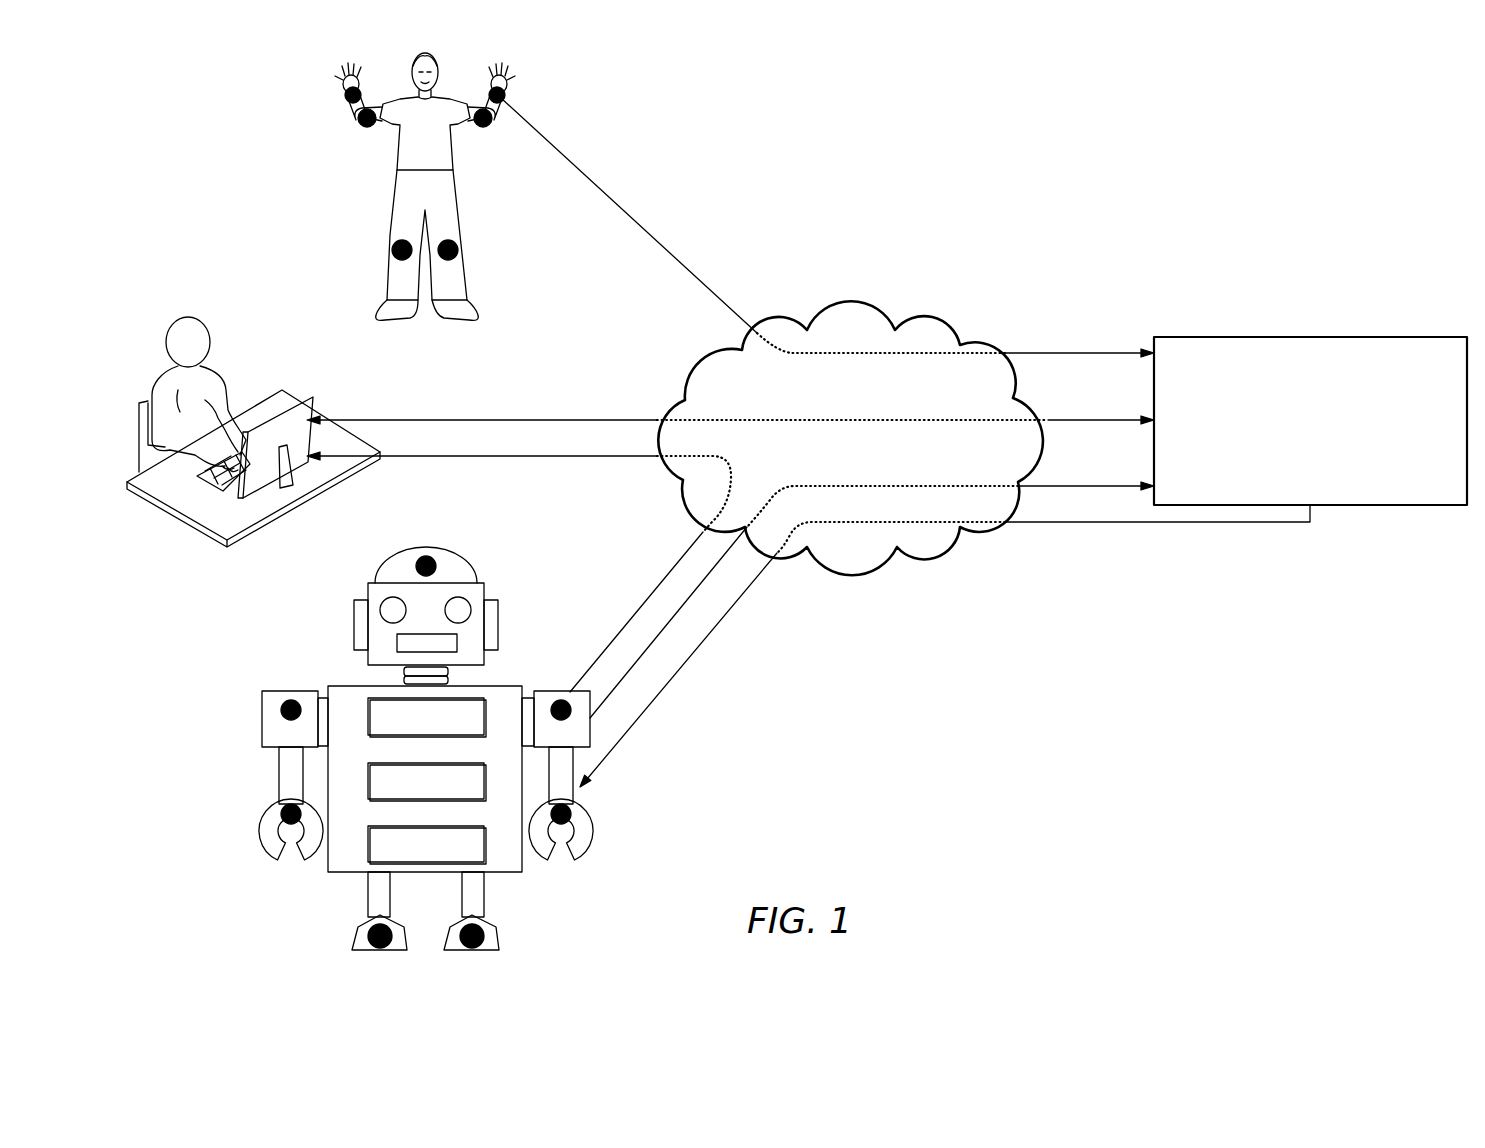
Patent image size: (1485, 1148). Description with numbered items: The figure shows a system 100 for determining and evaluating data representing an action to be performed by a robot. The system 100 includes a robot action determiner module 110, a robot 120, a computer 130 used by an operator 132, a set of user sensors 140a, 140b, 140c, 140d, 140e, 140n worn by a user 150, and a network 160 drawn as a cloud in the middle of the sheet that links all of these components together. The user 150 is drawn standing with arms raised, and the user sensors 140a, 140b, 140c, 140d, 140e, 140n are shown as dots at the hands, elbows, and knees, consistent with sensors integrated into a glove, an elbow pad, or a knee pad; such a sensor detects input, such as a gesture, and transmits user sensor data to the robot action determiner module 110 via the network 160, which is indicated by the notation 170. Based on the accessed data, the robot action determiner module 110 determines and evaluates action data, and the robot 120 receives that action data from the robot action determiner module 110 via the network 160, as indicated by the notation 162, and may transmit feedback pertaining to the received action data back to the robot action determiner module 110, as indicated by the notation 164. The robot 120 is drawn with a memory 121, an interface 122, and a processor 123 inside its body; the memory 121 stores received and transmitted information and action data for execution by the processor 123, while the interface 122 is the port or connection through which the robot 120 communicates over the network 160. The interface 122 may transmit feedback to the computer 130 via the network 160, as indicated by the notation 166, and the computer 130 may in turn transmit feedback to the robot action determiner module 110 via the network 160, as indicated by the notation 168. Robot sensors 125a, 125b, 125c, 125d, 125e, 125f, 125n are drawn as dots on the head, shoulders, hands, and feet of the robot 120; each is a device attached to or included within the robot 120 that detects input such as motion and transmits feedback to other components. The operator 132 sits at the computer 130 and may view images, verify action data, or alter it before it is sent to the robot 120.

The system 100 is at (1106, 129).
The robot action determiner module 110 is at (1296, 467).
The robot 120 is at (354, 614).
The memory 121 is at (399, 735).
The interface 122 is at (443, 763).
The processor 123 is at (443, 826).
The robot sensor 125a is at (440, 563).
The robot sensor 125b is at (558, 688).
The robot sensor 125c is at (572, 817).
The robot sensor 125d is at (491, 929).
The robot sensor 125e is at (358, 929).
The robot sensor 125f is at (280, 816).
The robot sensor 125n is at (280, 708).
The computer 130 is at (315, 397).
The operator 132 is at (203, 312).
The user sensor 140a is at (508, 88).
The user sensor 140b is at (484, 130).
The user sensor 140c is at (459, 250).
The user sensor 140d is at (391, 250).
The user sensor 140e is at (358, 120).
The user sensor 140n is at (346, 97).
The user 150 is at (436, 352).
The network 160 is at (868, 452).
The notation for action data transmission 162 is at (1085, 524).
The notation for robot feedback transmission 164 is at (1052, 487).
The notation for robot-to-computer feedback 166 is at (686, 548).
The notation for computer feedback transmission 168 is at (518, 420).
The notation for user sensor data transmission 170 is at (626, 209).